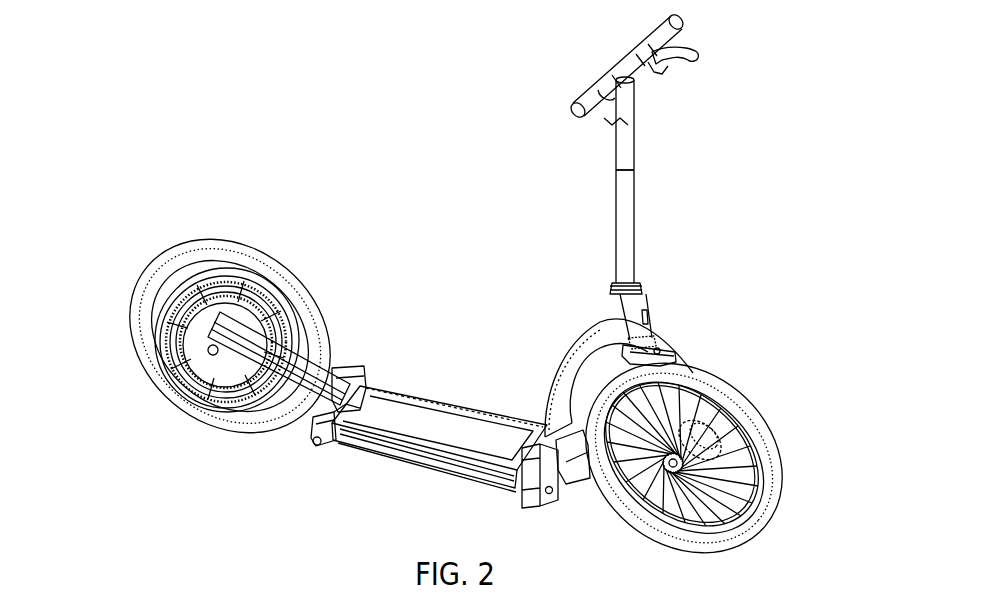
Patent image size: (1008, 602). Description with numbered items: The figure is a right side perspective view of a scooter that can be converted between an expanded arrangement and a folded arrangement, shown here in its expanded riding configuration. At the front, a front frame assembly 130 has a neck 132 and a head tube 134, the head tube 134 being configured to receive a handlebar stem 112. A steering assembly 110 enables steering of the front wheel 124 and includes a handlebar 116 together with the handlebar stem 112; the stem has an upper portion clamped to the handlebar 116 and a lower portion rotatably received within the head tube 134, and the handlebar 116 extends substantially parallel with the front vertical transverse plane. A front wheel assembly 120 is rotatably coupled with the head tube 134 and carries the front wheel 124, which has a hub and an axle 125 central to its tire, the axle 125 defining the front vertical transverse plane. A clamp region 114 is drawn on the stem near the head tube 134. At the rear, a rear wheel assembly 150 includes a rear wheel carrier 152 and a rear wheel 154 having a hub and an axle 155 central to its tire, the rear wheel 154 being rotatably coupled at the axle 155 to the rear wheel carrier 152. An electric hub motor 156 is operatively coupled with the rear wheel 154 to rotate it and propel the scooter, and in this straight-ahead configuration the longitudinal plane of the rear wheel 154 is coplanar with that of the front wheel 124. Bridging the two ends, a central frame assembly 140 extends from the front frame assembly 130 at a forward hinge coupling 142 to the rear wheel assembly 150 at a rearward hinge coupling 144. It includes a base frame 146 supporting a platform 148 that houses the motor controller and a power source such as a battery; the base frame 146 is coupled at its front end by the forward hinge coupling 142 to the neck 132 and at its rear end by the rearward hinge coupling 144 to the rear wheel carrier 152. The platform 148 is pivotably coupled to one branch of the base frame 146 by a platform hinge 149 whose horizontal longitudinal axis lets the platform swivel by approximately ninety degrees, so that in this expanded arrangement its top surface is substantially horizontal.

The steering assembly 110 is at (745, 142).
The handlebar stem 112 is at (637, 182).
The clamp 114 is at (657, 285).
The handlebar 116 is at (583, 112).
The front wheel assembly 120 is at (766, 350).
The front wheel 124 is at (777, 452).
The axle 125 is at (690, 466).
The front frame assembly 130 is at (502, 200).
The neck 132 is at (577, 340).
The head tube 134 is at (620, 313).
The central frame assembly 140 is at (400, 230).
The forward hinge coupling 142 is at (553, 453).
The rearward hinge coupling 144 is at (322, 434).
The base frame 146 is at (403, 457).
The platform 148 is at (492, 417).
The platform hinge 149 is at (477, 478).
The rear wheel assembly 150 is at (241, 176).
The rear wheel carrier 152 is at (297, 354).
The rear wheel 154 is at (178, 240).
The axle 155 is at (210, 350).
The electric hub motor 156 is at (177, 335).